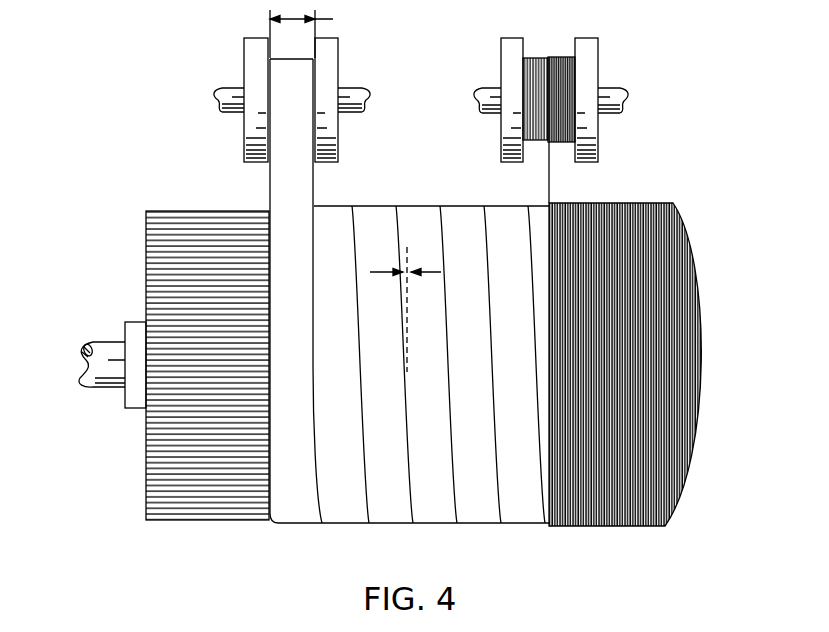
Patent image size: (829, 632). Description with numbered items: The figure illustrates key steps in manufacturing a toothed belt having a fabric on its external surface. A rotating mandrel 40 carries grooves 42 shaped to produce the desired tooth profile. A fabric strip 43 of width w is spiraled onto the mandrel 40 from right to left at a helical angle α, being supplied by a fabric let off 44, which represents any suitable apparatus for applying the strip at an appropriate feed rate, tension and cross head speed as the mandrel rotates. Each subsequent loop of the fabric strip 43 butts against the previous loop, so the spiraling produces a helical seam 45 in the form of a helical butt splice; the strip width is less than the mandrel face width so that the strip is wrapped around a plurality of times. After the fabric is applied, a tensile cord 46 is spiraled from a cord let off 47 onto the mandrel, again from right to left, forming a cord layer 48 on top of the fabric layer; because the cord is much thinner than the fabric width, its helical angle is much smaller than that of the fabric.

The mandrel 40 is at (146, 447).
The grooves 42 is at (170, 285).
The fabric strip 43 is at (268, 172).
The fabric let off 44 is at (337, 135).
The helical seam 45 is at (313, 480).
The tensile cord 46 is at (548, 172).
The cord let off 47 is at (595, 133).
The cord layer 48 is at (675, 225).